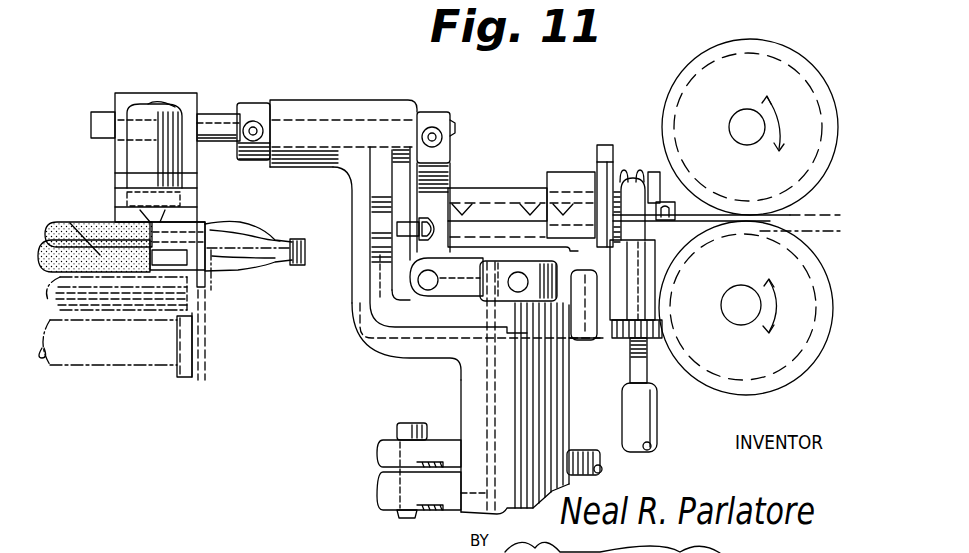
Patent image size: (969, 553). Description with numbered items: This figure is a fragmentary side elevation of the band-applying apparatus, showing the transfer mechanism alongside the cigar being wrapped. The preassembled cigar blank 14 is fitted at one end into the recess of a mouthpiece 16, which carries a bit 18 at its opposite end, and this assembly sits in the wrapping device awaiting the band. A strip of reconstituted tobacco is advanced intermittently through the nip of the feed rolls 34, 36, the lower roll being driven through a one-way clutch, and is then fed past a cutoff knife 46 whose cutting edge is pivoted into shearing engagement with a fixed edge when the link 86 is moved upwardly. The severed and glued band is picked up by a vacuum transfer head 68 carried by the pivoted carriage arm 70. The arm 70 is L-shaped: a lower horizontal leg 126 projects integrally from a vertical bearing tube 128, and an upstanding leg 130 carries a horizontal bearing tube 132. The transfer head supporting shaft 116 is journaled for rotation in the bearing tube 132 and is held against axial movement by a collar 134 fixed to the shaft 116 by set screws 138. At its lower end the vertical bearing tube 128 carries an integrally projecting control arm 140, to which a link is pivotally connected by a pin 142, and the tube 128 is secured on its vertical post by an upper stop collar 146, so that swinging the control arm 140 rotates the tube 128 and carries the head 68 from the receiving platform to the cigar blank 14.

The cigar blank 14 is at (75, 218).
The mouthpiece 16 is at (221, 233).
The bit 18 is at (299, 242).
The feed roll 34 is at (690, 72).
The feed roll 36 is at (755, 363).
The cutoff knife 46 is at (606, 156).
The vacuum transfer head 68 is at (112, 153).
The carriage arm 70 is at (355, 323).
The link 86 is at (651, 427).
The transfer head supporting shaft 116 is at (208, 120).
The lower horizontal leg 126 is at (412, 350).
The vertical bearing tube 128 is at (462, 385).
The upstanding leg 130 is at (350, 290).
The horizontal bearing tube 132 is at (339, 110).
The collar 134 is at (251, 160).
The set screw 138 is at (253, 120).
The control arm 140 is at (380, 490).
The pin 142 is at (397, 431).
The upper stop collar 146 is at (556, 269).